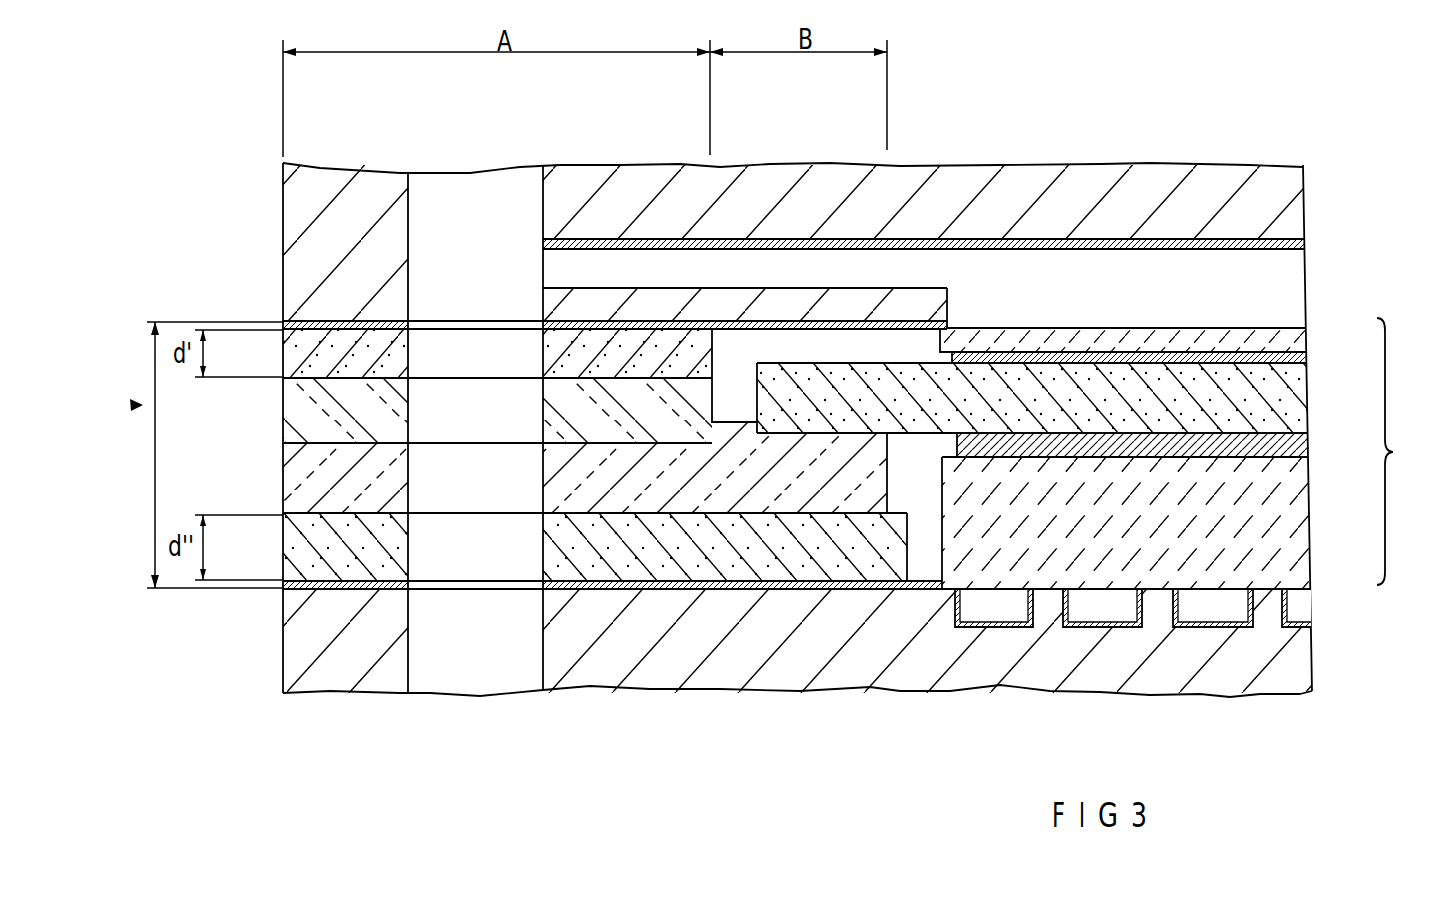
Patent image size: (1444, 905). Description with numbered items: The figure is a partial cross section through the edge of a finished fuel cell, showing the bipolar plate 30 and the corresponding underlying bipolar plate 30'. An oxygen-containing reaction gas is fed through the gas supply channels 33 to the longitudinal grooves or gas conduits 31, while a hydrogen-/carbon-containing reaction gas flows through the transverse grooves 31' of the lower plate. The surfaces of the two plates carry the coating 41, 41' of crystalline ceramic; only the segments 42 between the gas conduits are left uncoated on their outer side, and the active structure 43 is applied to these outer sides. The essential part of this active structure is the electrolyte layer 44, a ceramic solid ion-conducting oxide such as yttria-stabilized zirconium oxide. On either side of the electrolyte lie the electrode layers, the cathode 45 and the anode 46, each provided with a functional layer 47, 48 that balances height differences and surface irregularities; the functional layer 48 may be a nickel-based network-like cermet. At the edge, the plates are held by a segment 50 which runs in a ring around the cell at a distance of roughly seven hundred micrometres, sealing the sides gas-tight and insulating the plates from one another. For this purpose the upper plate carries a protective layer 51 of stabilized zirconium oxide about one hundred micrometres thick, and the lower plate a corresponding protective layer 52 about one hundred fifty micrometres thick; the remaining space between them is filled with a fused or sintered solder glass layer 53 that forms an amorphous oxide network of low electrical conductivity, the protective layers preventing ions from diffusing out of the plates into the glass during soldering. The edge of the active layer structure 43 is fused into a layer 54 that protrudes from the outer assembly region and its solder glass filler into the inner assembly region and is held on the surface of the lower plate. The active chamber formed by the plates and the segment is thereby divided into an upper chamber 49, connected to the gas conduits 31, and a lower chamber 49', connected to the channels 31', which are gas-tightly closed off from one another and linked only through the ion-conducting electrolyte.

The bipolar plate 30 is at (822, 410).
The underlying bipolar plate 30' is at (822, 674).
The gas conduits 31 is at (955, 264).
The transverse grooves 31' is at (1133, 676).
The gas supply channels 33 is at (478, 215).
The coating of crystalline ceramic 41 is at (580, 292).
The coating of crystalline ceramic 41' is at (764, 621).
The segments between the gas conduits 42 is at (1047, 603).
The active structure 43 is at (1429, 467).
The electrolyte layer 44 is at (1278, 395).
The cathode 45 is at (1290, 358).
The anode 46 is at (1292, 443).
The functional layer 47 is at (1243, 328).
The functional layer 48 is at (1280, 507).
The upper chamber 49 is at (745, 264).
The lower chamber 49' is at (906, 598).
The segment 50 is at (135, 405).
The protective layer 51 is at (310, 360).
The protective layer 52 is at (305, 553).
The solder glass layer 53 is at (300, 420).
The layer 54 is at (300, 483).